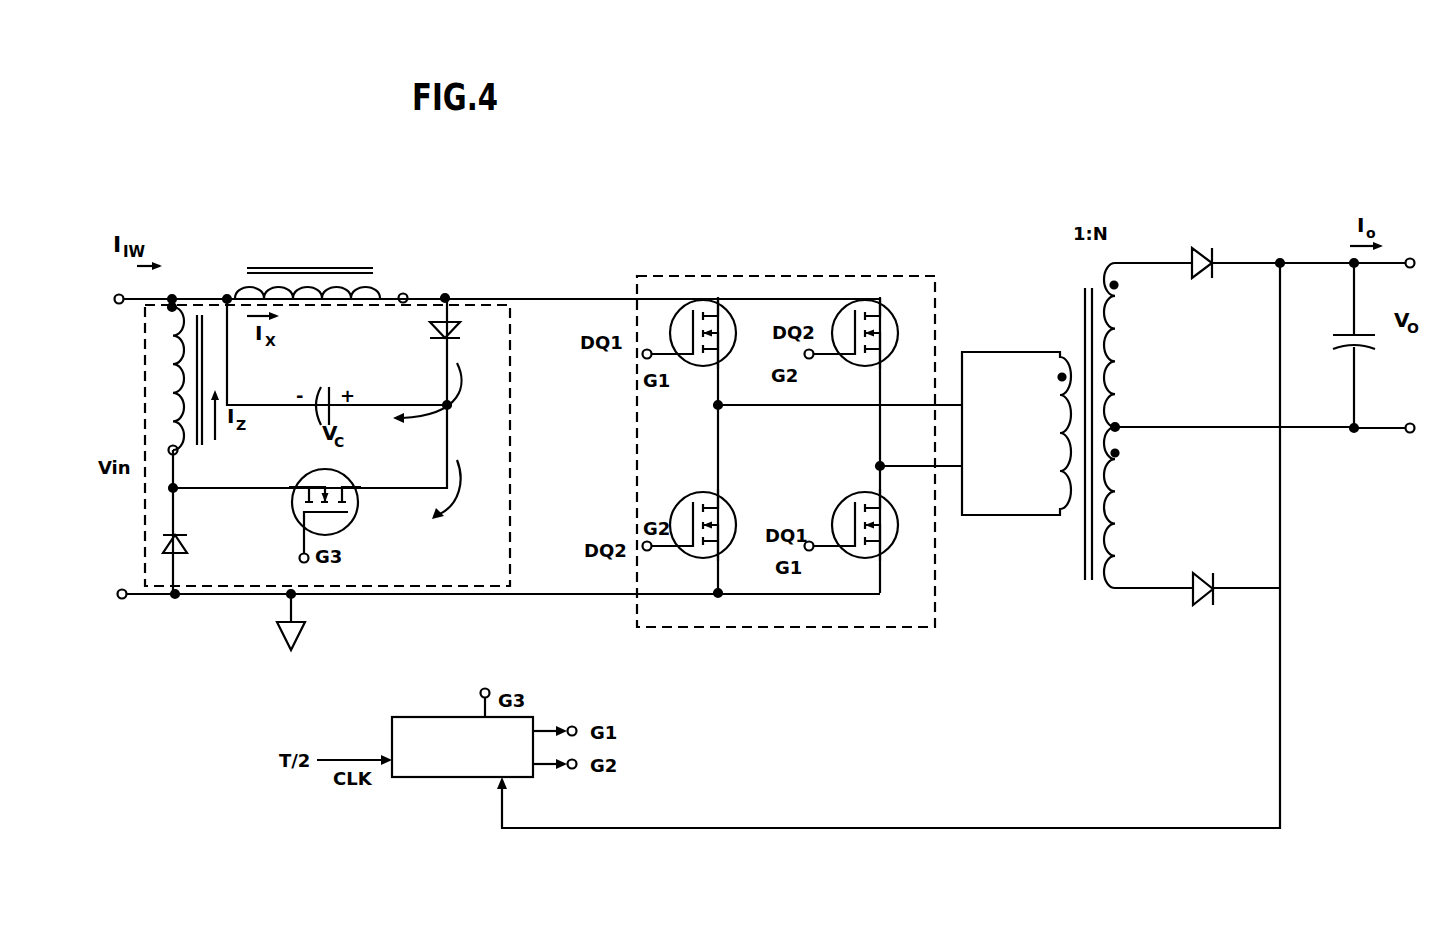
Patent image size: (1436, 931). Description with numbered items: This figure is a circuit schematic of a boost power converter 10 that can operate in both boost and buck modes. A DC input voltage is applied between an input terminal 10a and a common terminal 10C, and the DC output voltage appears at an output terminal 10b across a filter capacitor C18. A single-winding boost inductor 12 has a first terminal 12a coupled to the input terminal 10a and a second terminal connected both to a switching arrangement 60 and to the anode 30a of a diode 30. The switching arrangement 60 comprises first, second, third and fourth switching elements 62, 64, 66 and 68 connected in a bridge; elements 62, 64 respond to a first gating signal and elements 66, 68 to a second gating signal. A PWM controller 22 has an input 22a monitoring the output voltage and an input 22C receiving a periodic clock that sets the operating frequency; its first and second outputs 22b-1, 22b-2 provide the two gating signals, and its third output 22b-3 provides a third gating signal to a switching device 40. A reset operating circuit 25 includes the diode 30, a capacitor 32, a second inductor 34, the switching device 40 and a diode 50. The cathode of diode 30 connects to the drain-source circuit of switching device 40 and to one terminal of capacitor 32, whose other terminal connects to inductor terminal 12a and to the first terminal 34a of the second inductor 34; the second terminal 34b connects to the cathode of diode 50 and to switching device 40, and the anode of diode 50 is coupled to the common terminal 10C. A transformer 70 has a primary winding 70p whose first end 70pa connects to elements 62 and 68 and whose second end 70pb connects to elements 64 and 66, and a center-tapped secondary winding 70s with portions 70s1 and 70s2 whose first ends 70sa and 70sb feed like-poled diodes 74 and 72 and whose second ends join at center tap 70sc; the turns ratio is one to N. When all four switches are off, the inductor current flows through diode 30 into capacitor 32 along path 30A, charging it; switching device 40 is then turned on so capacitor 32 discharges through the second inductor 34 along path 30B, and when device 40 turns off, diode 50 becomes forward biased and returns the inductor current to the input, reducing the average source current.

The boost power converter 10 is at (985, 160).
The input terminal 10a is at (122, 288).
The output terminal 10b is at (405, 293).
The common terminal 10C is at (123, 583).
The boost inductor 12 is at (333, 262).
The first boost inductor terminal 12a is at (222, 295).
The PWM controller means 22 is at (445, 778).
The controller input 22a is at (505, 800).
The first controller output 22b-1 is at (543, 723).
The second controller output 22b-2 is at (541, 770).
The third controller output 22b-3 is at (480, 706).
The clock input 22C is at (340, 757).
The reset operating circuit 25 is at (470, 598).
The diode 30 is at (468, 330).
The anode terminal 30a is at (447, 297).
The electrical communication path 30A is at (427, 405).
The electrical communication path 30B is at (466, 489).
The capacitor 32 is at (324, 394).
The second inductor 34 is at (173, 407).
The first terminal of second inductor 34a is at (172, 310).
The second terminal of second inductor 34b is at (178, 450).
The switching device 40 is at (345, 516).
The diode 50 is at (192, 542).
The switching arrangement 60 is at (777, 273).
The first switching element 62 is at (690, 345).
The second switching element 64 is at (852, 536).
The third switching element 66 is at (852, 344).
The fourth switching element 68 is at (690, 536).
The transformer 70 is at (1100, 196).
The primary winding 70p is at (1058, 432).
The first end of primary winding 70pa is at (1037, 368).
The second end of primary winding 70pb is at (1035, 498).
The secondary winding 70s is at (1156, 409).
The first secondary winding portion 70s1 is at (1147, 340).
The second secondary winding portion 70s2 is at (1117, 510).
The first end of first secondary portion 70sa is at (1152, 280).
The first end of second secondary portion 70sb is at (1154, 574).
The secondary winding center tap 70sc is at (1120, 432).
The unidirectionally-conducting element 72 is at (1203, 607).
The unidirectionally-conducting element 74 is at (1201, 245).
The filter capacitor C18 is at (1374, 345).